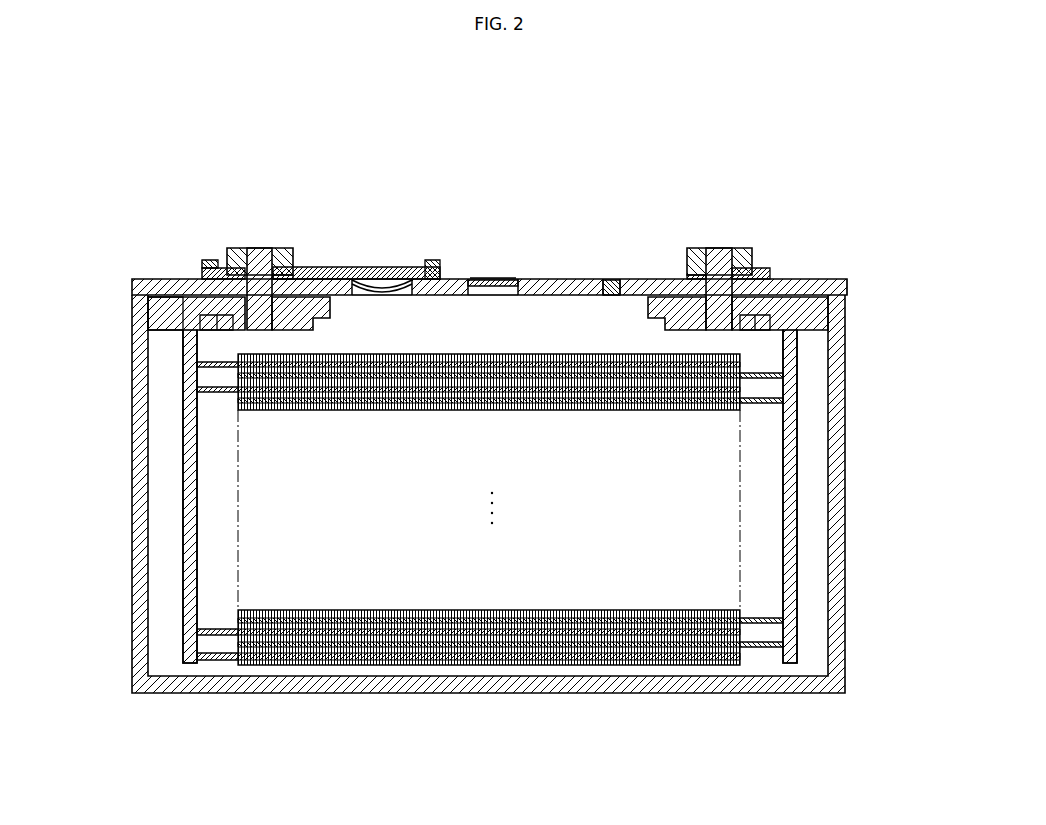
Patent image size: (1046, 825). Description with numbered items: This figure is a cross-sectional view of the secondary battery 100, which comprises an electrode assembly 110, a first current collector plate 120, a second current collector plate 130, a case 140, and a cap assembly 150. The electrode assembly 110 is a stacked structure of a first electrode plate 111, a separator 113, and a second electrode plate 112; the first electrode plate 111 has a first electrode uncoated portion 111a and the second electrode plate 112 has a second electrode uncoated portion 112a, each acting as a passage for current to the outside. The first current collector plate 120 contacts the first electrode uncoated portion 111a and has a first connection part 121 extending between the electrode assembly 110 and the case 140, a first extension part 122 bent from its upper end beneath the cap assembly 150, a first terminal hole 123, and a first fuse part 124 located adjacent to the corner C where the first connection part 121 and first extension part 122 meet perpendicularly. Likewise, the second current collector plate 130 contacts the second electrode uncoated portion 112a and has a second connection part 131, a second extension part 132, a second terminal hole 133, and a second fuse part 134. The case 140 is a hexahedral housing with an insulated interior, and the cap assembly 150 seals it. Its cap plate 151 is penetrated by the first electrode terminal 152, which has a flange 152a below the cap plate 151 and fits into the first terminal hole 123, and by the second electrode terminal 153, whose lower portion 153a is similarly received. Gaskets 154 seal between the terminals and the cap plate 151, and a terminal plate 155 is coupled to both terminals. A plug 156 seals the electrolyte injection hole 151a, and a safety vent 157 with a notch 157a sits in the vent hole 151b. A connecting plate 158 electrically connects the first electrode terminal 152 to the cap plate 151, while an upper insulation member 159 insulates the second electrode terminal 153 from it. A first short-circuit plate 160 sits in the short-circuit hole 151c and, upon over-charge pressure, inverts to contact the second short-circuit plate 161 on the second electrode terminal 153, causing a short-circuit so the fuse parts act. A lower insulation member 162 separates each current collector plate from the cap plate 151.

The secondary battery 100 is at (806, 147).
The electrode assembly 110 is at (488, 553).
The first electrode plate 111 is at (660, 655).
The first electrode uncoated portion 111a is at (760, 648).
The second electrode plate 112 is at (357, 665).
The second electrode uncoated portion 112a is at (215, 661).
The separator 113 is at (515, 664).
The first current collector plate 120 is at (798, 437).
The first connection part 121 is at (797, 512).
The first extension part 122 is at (762, 290).
The first terminal hole 123 is at (787, 335).
The first fuse part 124 is at (757, 283).
The second current collector plate 130 is at (182, 437).
The second connection part 131 is at (190, 528).
The second extension part 132 is at (238, 290).
The second terminal hole 133 is at (252, 330).
The second fuse part 134 is at (205, 281).
The case 140 is at (845, 392).
The cap assembly 150 is at (568, 192).
The cap plate 151 is at (560, 279).
The electrolyte injection hole 151a is at (590, 296).
The vent hole 151b is at (494, 296).
The short-circuit hole 151c is at (398, 297).
The first electrode terminal 152 is at (718, 248).
The flange 152a is at (660, 318).
The second electrode terminal 153 is at (258, 248).
The second terminal lower portion 153a is at (316, 317).
The gaskets 154 is at (222, 262).
The terminal plate 155 is at (288, 248).
The plug 156 is at (608, 280).
The safety vent 157 is at (516, 280).
The notch 157a is at (482, 278).
The connecting plate 158 is at (740, 279).
The upper insulation member 159 is at (432, 260).
The first short-circuit plate 160 is at (380, 280).
The second short-circuit plate 161 is at (330, 267).
The lower insulation member 162 is at (155, 315).
The corner C is at (148, 312).